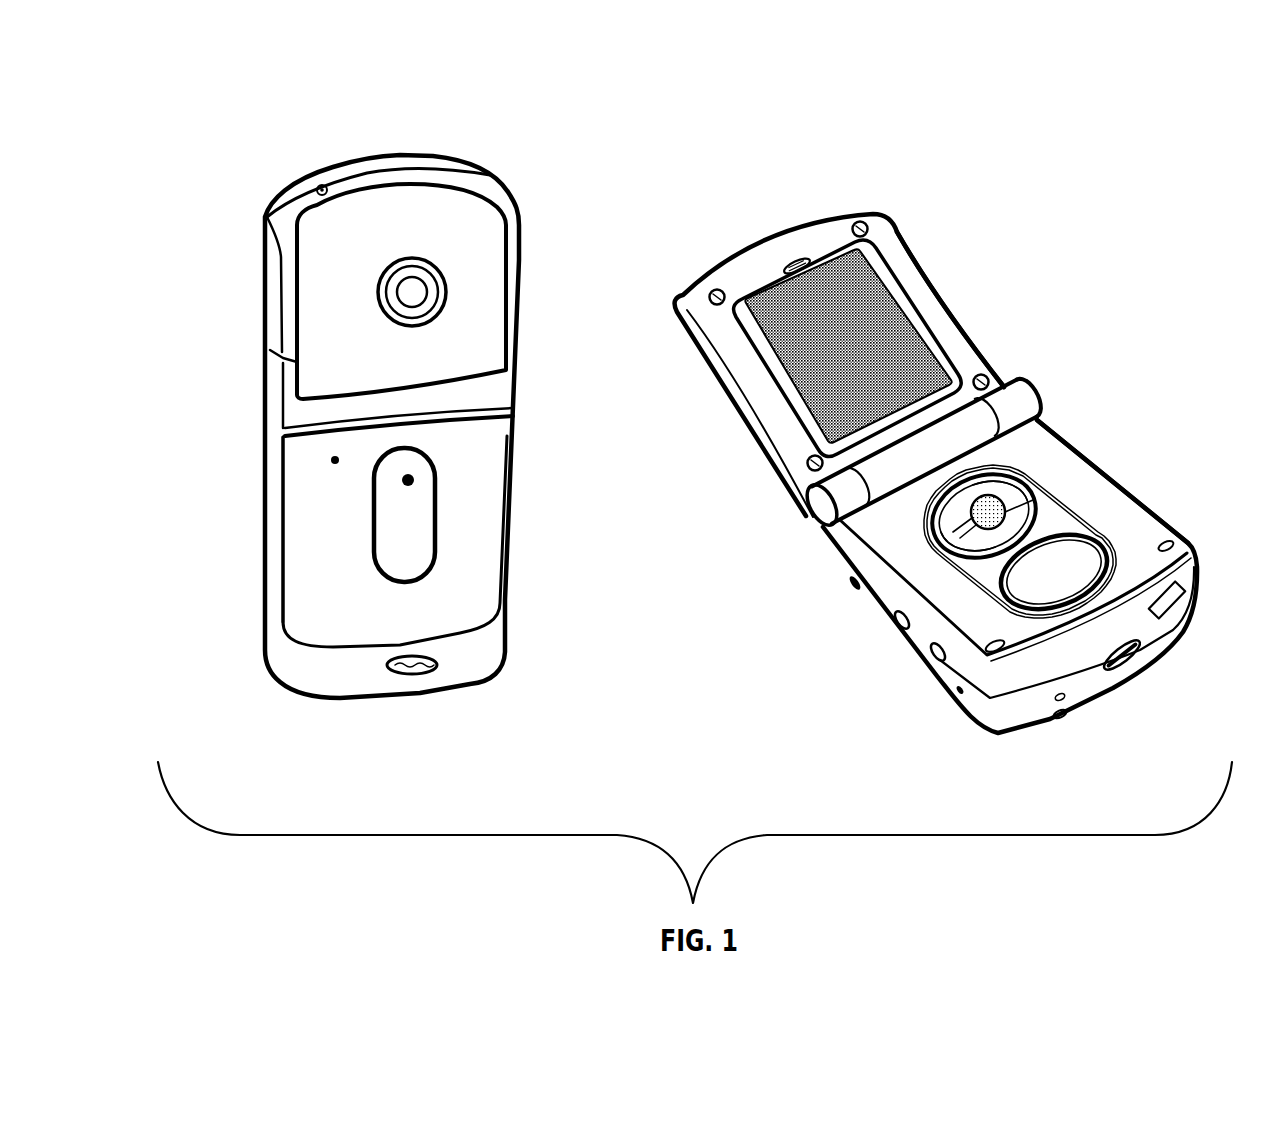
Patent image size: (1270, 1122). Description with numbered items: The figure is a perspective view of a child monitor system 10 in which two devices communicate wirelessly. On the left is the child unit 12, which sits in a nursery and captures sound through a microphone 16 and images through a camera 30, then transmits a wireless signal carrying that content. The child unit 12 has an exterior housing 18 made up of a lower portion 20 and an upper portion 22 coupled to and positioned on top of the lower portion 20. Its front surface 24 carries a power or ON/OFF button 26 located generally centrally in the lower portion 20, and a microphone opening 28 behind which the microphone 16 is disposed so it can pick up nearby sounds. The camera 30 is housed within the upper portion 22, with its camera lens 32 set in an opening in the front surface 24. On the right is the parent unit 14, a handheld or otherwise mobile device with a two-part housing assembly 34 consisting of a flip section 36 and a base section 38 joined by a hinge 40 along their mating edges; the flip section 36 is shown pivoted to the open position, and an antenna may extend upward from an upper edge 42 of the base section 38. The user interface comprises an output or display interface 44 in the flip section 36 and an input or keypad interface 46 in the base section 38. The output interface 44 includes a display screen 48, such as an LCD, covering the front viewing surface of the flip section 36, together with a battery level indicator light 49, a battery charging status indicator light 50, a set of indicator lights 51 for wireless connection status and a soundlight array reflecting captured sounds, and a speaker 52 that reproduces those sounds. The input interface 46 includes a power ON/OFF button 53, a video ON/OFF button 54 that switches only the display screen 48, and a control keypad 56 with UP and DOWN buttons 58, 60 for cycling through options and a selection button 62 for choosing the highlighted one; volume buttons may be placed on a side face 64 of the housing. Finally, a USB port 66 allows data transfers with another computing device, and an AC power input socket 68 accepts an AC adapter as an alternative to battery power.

The child monitor system 10 is at (635, 99).
The child unit 12 is at (262, 280).
The parent unit 14 is at (920, 263).
The microphone 16 is at (328, 460).
The exterior housing 18 is at (265, 641).
The lower portion 20 is at (510, 542).
The upper portion 22 is at (520, 292).
The front surface 24 is at (283, 570).
The power or ON/OFF button 26 is at (437, 515).
The microphone opening 28 is at (335, 465).
The camera 30 is at (442, 274).
The camera lens 32 is at (381, 313).
The housing assembly 34 is at (1062, 433).
The flip section 36 is at (944, 298).
The base section 38 is at (1126, 492).
The hinge 40 is at (1030, 390).
The upper edge 42 is at (827, 540).
The output or display interface 44 is at (786, 375).
The input or keypad interface 46 is at (950, 547).
The display screen 48 is at (775, 292).
The battery level indicator light 49 is at (1058, 722).
The battery charging status indicator light 50 is at (1183, 628).
The set of indicator lights 51 is at (748, 240).
The speaker 52 is at (1123, 664).
The power ON/OFF button 53 is at (895, 634).
The video ON/OFF button 54 is at (1108, 573).
The control keypad 56 is at (1023, 481).
The UP button 58 is at (938, 522).
The DOWN button 60 is at (1035, 523).
The selection button 62 is at (1005, 505).
The side face 64 is at (1164, 525).
The USB port 66 is at (1181, 604).
The AC power input socket 68 is at (935, 663).